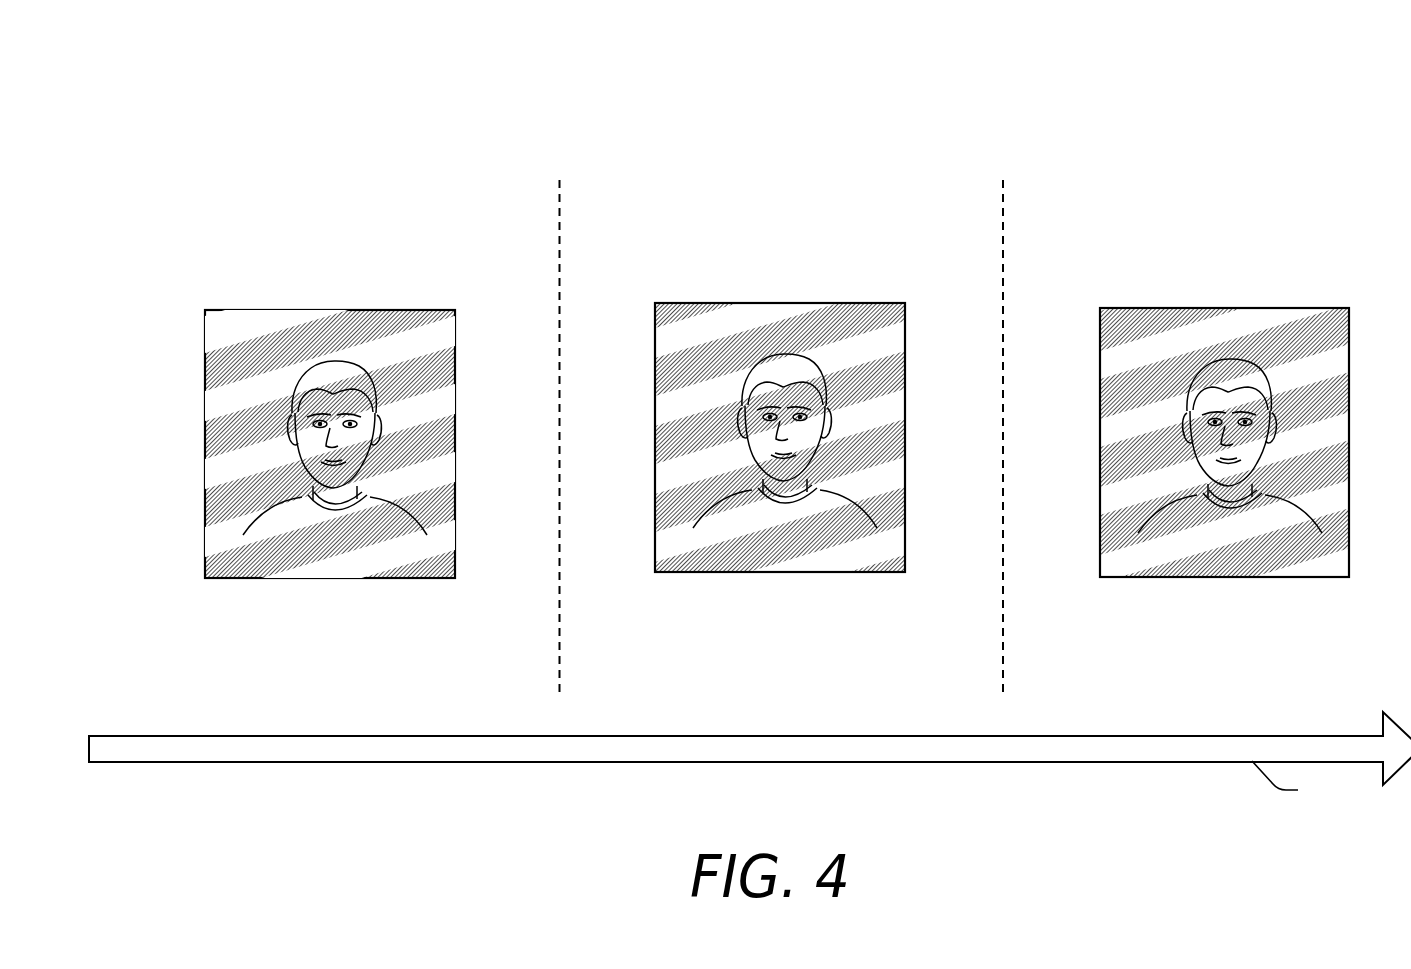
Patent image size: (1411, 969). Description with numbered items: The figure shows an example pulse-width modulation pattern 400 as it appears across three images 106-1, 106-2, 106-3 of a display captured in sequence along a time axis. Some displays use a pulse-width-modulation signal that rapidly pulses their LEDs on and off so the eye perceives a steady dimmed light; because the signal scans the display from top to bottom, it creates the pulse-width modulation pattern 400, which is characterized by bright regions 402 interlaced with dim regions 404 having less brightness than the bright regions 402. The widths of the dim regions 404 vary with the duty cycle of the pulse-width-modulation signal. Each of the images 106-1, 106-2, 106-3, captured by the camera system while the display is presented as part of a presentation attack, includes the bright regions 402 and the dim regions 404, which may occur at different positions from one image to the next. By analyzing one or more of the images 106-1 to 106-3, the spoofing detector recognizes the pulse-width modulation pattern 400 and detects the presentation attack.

The pulse-width modulation pattern 400 is at (299, 112).
The bright region 402 is at (233, 321).
The dim region 404 is at (352, 322).
The image 106-1 is at (283, 456).
The image 106-2 is at (727, 572).
The image 106-3 is at (1152, 577).